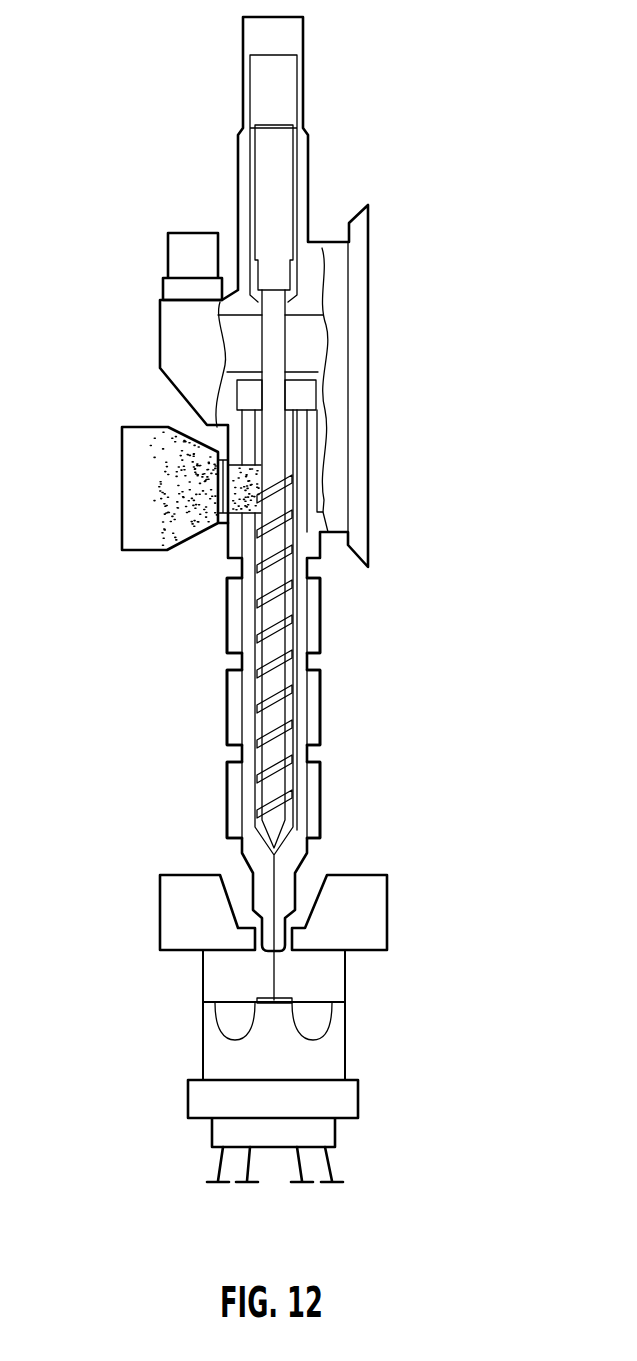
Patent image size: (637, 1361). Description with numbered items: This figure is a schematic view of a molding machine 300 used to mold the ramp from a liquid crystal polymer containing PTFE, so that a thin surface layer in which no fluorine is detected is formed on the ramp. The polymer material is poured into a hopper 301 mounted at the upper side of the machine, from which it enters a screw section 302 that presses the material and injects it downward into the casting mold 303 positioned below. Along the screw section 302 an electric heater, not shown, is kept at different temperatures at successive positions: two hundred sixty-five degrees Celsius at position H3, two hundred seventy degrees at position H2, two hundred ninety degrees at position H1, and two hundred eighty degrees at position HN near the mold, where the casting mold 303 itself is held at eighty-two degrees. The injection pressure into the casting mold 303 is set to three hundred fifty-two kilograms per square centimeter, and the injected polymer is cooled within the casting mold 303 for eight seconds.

The molding machine 300 is at (167, 267).
The hopper 301 is at (137, 426).
The screw section 302 is at (262, 727).
The casting mold 303 is at (217, 1053).
The position H1 is at (330, 800).
The position H2 is at (330, 707).
The position H3 is at (330, 615).
The position HN is at (407, 913).